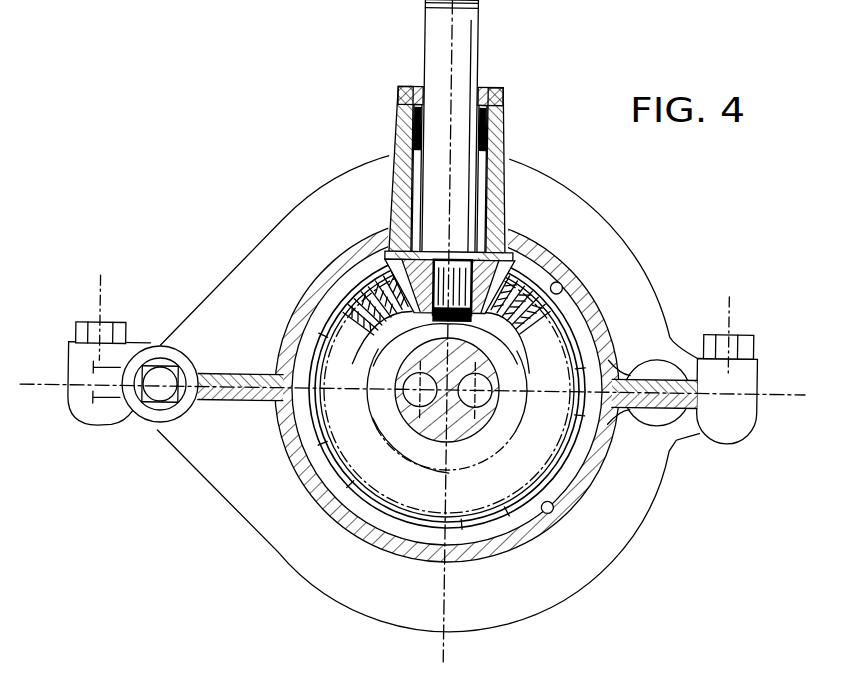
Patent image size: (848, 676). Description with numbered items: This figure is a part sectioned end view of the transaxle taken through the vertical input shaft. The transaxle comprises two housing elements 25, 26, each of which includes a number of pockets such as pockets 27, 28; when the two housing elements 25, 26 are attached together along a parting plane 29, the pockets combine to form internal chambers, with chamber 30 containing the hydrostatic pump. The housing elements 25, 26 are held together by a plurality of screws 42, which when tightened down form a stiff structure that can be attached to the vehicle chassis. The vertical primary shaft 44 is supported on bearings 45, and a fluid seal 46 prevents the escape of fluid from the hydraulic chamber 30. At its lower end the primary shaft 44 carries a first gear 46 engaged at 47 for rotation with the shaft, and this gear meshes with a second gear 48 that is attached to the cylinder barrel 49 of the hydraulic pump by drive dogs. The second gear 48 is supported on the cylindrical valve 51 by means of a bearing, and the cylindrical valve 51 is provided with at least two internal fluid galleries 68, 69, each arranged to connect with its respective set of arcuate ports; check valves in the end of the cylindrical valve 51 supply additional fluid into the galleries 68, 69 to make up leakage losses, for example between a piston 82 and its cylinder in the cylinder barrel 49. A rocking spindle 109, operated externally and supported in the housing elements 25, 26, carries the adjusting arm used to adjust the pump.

The housing element 25 is at (602, 308).
The housing element 26 is at (608, 465).
The pocket 27 is at (578, 275).
The pocket 28 is at (569, 491).
The parting plane 29 is at (37, 388).
The chamber 30 is at (392, 524).
The screws 42 is at (96, 331).
The primary shaft 44 is at (451, 42).
The bearings 45 is at (493, 127).
The fluid seal / first gear 46 is at (484, 91).
The engagement 47 is at (473, 321).
The second gear 48 is at (359, 324).
The cylinder barrel 49 is at (431, 500).
The cylindrical valve 51 is at (458, 430).
The fluid gallery 68 is at (379, 413).
The fluid gallery 69 is at (518, 394).
The piston 82 is at (318, 478).
The rocking spindle 109 is at (150, 416).